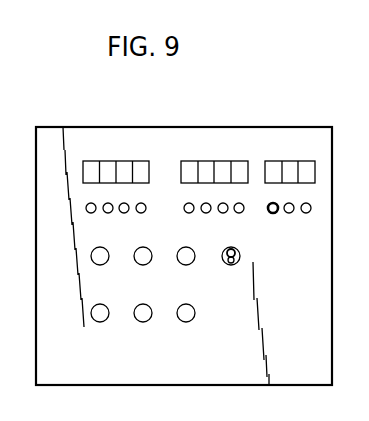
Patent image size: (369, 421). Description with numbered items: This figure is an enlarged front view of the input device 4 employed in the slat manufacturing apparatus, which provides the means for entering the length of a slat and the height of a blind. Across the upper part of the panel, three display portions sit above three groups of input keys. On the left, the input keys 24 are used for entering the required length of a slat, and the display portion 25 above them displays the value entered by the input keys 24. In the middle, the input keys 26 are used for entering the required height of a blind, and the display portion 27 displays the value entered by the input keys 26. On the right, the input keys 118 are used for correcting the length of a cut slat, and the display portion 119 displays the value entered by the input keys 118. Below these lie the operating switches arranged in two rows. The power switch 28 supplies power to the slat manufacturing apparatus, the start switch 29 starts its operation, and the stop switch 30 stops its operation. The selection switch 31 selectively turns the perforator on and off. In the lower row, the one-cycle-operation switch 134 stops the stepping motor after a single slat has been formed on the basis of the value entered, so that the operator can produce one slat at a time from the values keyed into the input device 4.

The input device 4 is at (271, 127).
The display portion 25 is at (127, 163).
The display portion 27 is at (222, 163).
The display portion 119 is at (289, 163).
The input keys 24 is at (91, 213).
The input keys 26 is at (189, 213).
The input keys 118 is at (273, 213).
The power switch 28 is at (100, 265).
The start switch 29 is at (143, 265).
The stop switch 30 is at (186, 265).
The selection switch 31 is at (231, 265).
The one-cycle-operation switch 134 is at (100, 322).